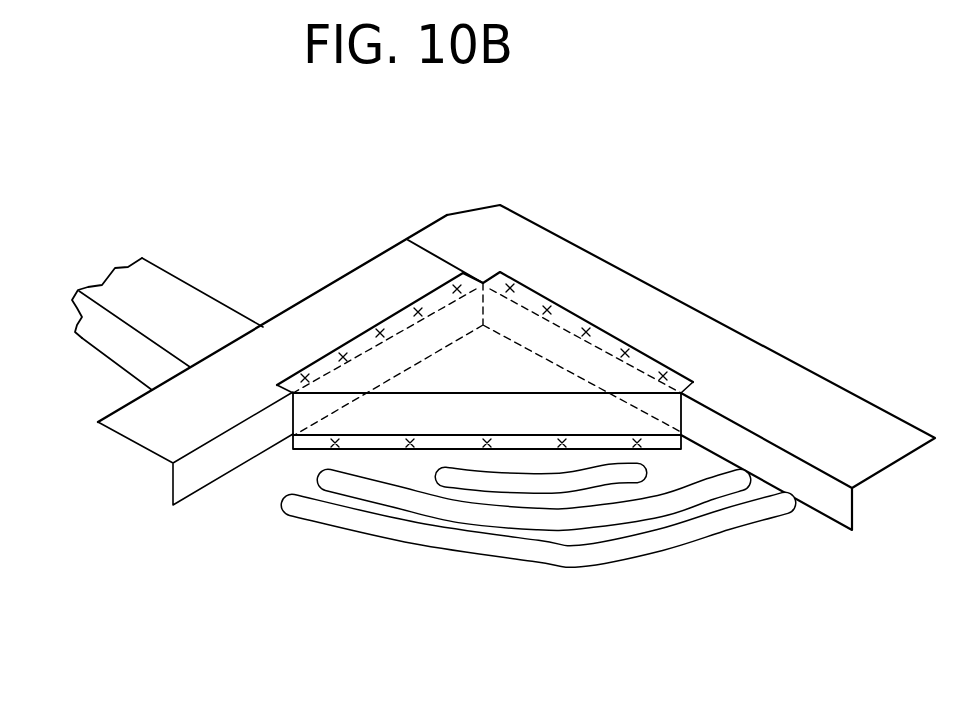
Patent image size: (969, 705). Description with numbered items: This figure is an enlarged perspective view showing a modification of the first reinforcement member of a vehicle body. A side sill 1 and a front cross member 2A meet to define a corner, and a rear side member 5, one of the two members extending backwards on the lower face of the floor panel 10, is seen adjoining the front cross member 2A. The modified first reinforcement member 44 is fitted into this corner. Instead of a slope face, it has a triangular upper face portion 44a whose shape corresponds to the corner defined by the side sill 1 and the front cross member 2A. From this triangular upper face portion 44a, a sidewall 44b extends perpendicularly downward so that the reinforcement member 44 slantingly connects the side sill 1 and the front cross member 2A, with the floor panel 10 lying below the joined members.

The side sill 1 is at (783, 374).
The front cross member 2A is at (133, 415).
The rear side member 5 is at (180, 298).
The first reinforcement member 44 is at (522, 306).
The triangular upper face portion 44a is at (543, 340).
The sidewall 44b is at (623, 417).
The floor panel 10 is at (760, 540).